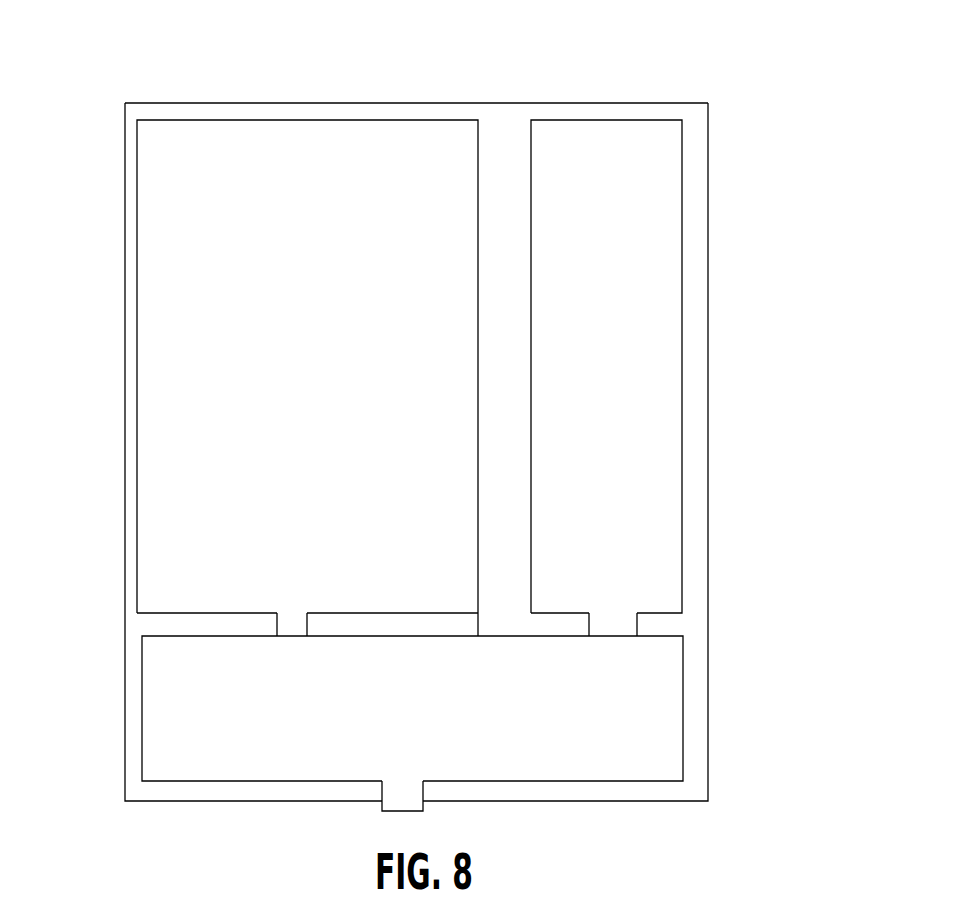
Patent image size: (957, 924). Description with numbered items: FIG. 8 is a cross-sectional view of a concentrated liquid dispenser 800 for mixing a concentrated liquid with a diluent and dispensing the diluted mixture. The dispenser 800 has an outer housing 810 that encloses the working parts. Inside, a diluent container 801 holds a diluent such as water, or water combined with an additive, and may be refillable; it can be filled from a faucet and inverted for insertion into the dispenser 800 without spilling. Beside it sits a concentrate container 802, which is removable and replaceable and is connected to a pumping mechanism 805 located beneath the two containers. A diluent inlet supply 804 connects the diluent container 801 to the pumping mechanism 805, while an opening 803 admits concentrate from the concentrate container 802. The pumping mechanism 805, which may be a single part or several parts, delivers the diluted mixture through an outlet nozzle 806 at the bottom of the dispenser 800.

The concentrated liquid dispenser 800 is at (300, 62).
The housing 810 is at (525, 103).
The diluent container 801 is at (138, 228).
The concentrate container 802 is at (683, 242).
The second gap 803 is at (637, 625).
The diluent inlet supply 804 is at (277, 624).
The pumping mechanism 805 is at (683, 718).
The outlet nozzle 806 is at (382, 804).